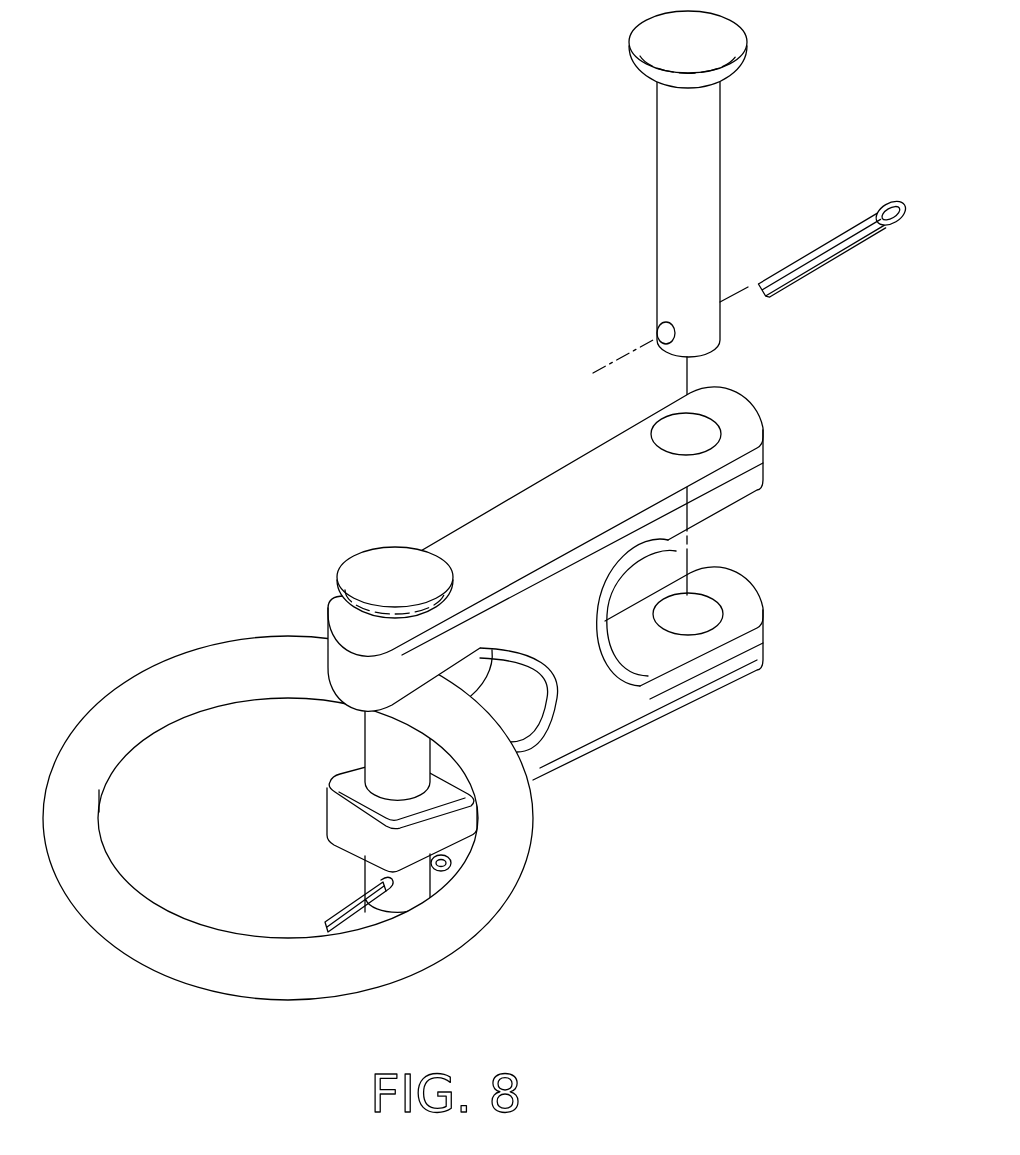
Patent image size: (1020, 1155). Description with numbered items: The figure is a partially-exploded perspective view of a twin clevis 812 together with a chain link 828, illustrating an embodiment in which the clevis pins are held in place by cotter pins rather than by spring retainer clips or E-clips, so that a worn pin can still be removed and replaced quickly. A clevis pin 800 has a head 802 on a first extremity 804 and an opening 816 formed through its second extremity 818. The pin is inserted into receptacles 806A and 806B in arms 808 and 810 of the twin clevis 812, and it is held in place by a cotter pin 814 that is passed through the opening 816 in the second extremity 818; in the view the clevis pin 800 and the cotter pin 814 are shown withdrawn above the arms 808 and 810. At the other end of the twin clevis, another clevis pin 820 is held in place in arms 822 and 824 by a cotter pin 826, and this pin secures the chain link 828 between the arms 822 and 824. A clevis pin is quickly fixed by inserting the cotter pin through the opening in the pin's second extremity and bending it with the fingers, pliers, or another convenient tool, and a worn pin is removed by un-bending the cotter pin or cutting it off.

The clevis pin 800 is at (690, 192).
The head 802 is at (748, 50).
The first extremity 804 is at (652, 86).
The receptacle 806A is at (706, 420).
The receptacle 806B is at (717, 602).
The arm 808 is at (766, 453).
The arm 810 is at (765, 645).
The twin clevis 812 is at (637, 568).
The cotter pin 814 is at (841, 248).
The opening 816 is at (656, 333).
The second extremity 818 is at (723, 335).
The clevis pin 820 is at (362, 718).
The arm 822 is at (336, 624).
The arm 824 is at (325, 817).
The cotter pin 826 is at (383, 888).
The chain link 828 is at (492, 913).